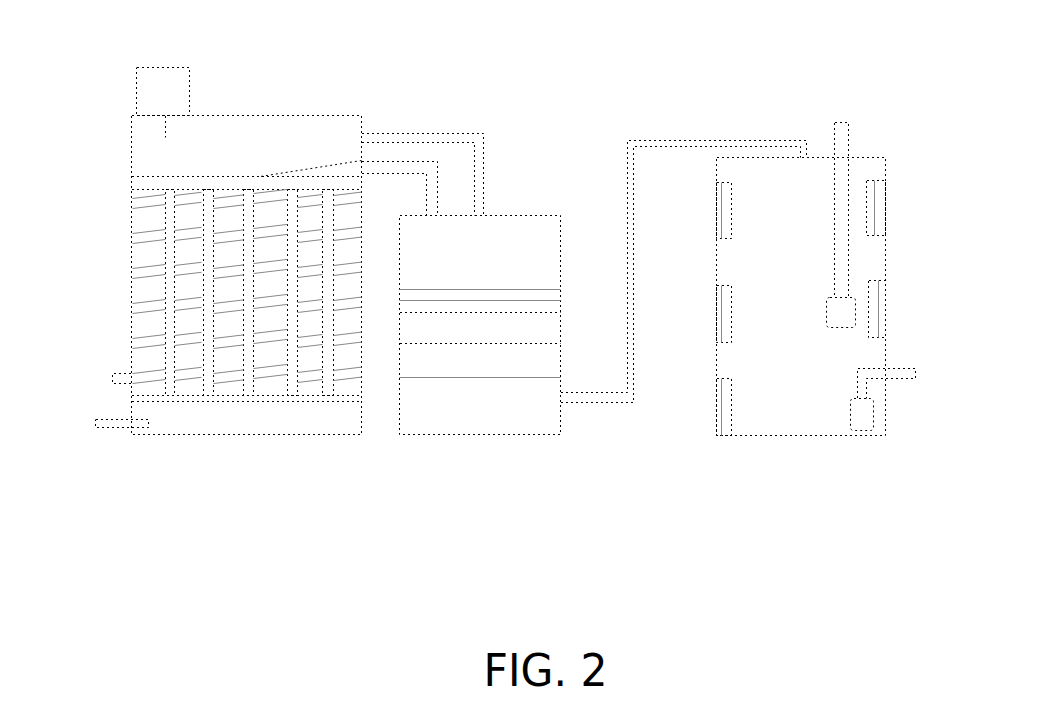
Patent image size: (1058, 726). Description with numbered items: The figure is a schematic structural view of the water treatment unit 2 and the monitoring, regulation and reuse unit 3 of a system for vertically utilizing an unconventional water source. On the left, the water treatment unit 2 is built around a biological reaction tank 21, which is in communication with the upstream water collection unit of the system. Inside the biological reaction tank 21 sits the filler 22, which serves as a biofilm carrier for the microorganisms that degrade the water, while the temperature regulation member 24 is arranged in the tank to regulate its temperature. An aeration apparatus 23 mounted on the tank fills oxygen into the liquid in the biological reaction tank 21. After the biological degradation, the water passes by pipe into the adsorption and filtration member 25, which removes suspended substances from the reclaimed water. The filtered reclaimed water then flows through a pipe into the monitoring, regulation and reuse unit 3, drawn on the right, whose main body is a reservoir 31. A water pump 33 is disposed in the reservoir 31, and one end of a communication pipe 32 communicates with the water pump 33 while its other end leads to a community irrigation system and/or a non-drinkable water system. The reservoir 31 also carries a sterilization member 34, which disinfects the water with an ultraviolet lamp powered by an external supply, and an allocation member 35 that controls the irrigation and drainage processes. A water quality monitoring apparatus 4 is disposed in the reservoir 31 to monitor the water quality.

The water treatment unit 2 is at (425, 276).
The biological reaction tank 21 is at (203, 260).
The filler 22 is at (194, 293).
The aeration apparatus 23 is at (122, 61).
The temperature regulation member 24 is at (203, 261).
The adsorption and filtration member 25 is at (480, 367).
The monitoring, regulation and reuse unit 3 is at (838, 302).
The reservoir 31 is at (801, 329).
The communication pipe 32 is at (909, 370).
The water pump 33 is at (899, 411).
The sterilization member 34 is at (908, 308).
The allocation member 35 is at (906, 203).
The water quality monitoring apparatus 4 is at (872, 197).